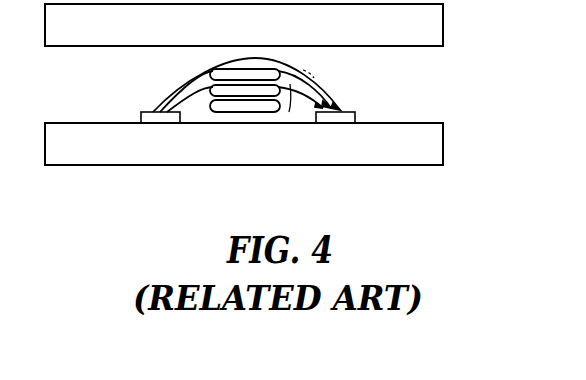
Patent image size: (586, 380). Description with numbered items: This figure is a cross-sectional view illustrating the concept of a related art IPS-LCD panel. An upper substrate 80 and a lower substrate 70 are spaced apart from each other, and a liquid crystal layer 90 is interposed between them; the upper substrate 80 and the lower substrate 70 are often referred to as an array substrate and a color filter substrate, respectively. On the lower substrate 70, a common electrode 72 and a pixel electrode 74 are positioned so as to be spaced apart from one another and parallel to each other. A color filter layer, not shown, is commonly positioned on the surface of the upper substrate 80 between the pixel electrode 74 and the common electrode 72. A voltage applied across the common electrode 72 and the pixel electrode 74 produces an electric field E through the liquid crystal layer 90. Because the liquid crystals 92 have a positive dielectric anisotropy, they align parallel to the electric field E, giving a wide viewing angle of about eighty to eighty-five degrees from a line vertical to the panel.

The lower substrate 70 is at (462, 124).
The common electrode 72 is at (163, 123).
The pixel electrode 74 is at (347, 123).
The upper substrate 80 is at (462, 3).
The liquid crystal layer 90 is at (462, 47).
The liquid crystals 92 is at (240, 112).
The electric field E is at (297, 92).